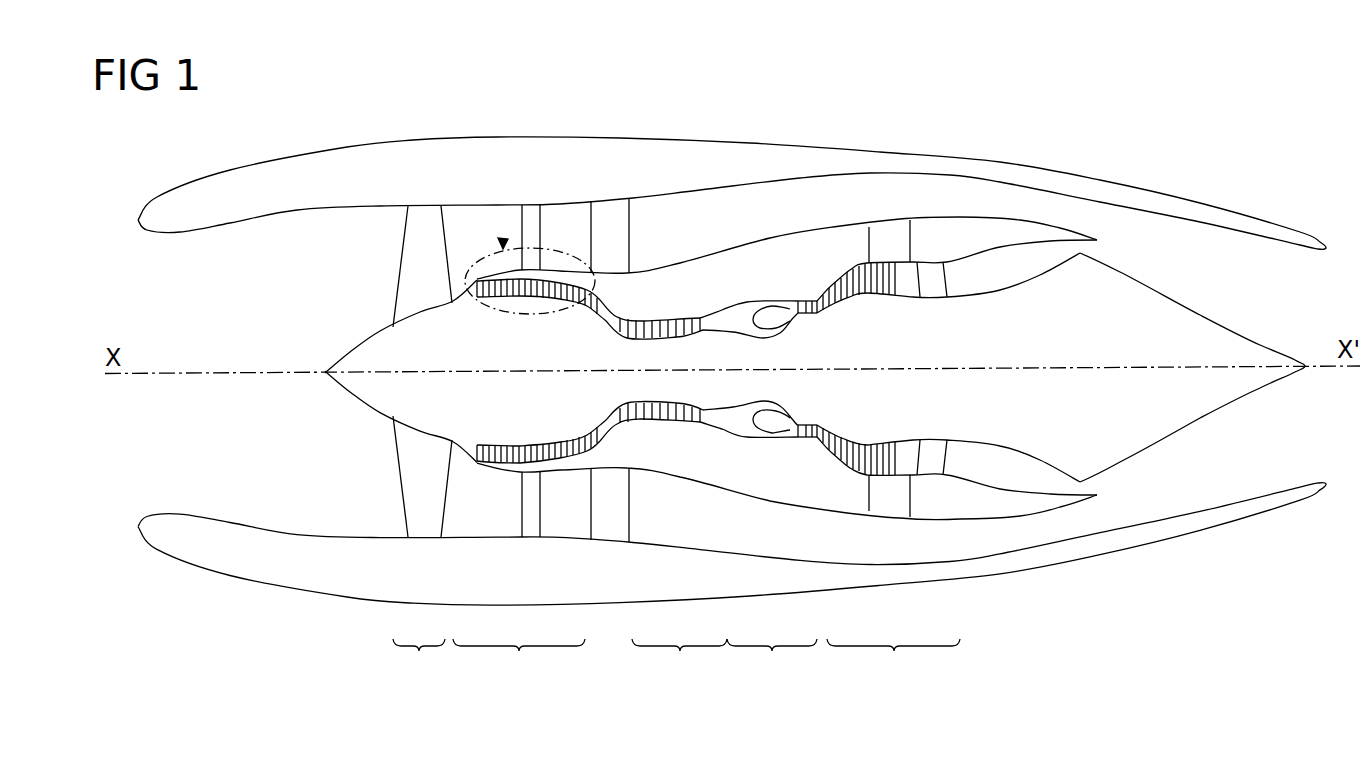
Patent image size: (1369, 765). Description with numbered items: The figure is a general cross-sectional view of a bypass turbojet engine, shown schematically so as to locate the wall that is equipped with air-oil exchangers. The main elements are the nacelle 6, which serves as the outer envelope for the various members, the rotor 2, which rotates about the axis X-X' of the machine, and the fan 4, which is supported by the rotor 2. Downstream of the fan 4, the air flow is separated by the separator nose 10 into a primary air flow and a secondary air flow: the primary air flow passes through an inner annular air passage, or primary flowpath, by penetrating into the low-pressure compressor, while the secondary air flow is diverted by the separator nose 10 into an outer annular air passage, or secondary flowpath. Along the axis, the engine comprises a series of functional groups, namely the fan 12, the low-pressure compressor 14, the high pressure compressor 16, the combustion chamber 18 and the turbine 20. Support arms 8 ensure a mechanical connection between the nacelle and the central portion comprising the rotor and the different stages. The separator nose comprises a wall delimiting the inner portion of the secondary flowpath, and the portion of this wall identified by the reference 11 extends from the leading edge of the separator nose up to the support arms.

The rotor 2 is at (411, 365).
The fan 4 is at (405, 278).
The nacelle 6 is at (427, 150).
The support arms 8 is at (620, 233).
The separator nose 10 is at (490, 273).
The wall portion 11 is at (503, 245).
The fan 12 is at (402, 444).
The low-pressure compressor 14 is at (775, 443).
The high pressure compressor 16 is at (659, 440).
The combustion chamber 18 is at (758, 492).
The turbine 20 is at (1061, 451).